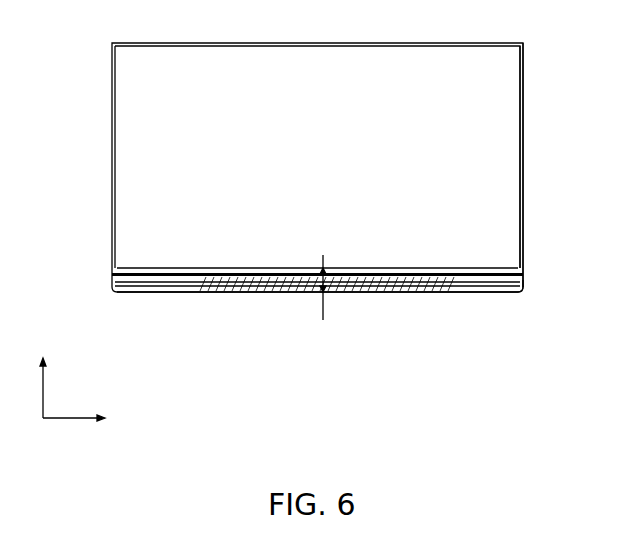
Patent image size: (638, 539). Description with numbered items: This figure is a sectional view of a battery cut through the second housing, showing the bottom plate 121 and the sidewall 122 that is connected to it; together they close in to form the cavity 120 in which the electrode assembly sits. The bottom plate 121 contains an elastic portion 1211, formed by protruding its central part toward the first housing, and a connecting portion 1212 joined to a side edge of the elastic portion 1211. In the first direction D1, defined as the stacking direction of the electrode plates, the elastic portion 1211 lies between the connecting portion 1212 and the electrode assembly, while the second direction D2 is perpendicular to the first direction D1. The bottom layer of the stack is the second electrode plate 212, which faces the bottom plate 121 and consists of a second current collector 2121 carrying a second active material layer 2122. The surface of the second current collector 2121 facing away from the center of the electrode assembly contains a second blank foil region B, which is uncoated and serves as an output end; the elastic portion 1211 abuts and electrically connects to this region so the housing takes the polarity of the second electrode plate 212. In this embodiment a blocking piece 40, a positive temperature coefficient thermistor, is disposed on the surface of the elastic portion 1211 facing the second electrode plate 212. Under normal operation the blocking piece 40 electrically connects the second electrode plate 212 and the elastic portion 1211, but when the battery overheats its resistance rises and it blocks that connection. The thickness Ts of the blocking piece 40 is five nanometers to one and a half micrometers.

The cavity 120 is at (172, 56).
The sidewall 122 is at (527, 158).
The bottom plate 121 is at (320, 328).
The elastic portion 1211 is at (382, 293).
The connecting portion 1212 is at (493, 294).
The second electrode plate 212 is at (317, 317).
The second current collector 2121 is at (155, 283).
The second active material layer 2122 is at (207, 283).
The blocking piece 40 is at (277, 288).
The second blank foil region B is at (303, 281).
The thickness of the blocking piece Ts is at (335, 290).
The first direction D1 is at (41, 376).
The second direction D2 is at (86, 422).